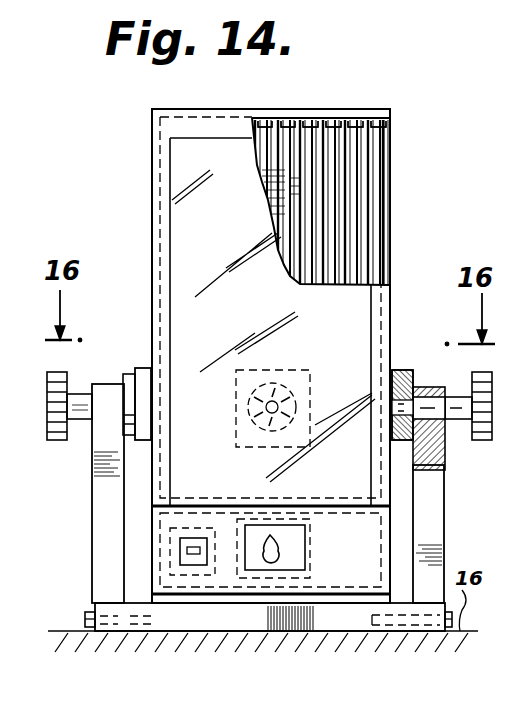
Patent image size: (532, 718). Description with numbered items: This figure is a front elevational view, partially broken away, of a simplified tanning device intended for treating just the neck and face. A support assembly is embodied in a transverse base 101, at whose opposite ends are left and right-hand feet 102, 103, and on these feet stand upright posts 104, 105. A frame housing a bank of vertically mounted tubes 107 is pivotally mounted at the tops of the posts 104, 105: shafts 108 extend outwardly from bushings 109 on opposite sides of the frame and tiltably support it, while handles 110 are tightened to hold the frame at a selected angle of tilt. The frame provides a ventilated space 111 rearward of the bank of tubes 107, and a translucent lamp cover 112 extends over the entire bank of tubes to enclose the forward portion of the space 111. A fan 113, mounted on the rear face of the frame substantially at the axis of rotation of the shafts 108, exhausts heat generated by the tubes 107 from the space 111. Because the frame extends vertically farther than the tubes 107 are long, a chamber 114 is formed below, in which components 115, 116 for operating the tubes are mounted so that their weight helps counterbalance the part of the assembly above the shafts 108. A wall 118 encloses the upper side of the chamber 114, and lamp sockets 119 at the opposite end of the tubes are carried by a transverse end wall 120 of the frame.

The transverse base 101 is at (336, 620).
The left-hand foot 102 is at (105, 631).
The right-hand foot 103 is at (430, 633).
The upright post 104 is at (105, 528).
The upright post 105 is at (440, 517).
The vertically mounted tubes 107 is at (338, 192).
The shaft 108 is at (424, 395).
The bushing 109 is at (145, 387).
The handle 110 is at (63, 378).
The ventilated space 111 is at (384, 226).
The translucent lamp cover 112 is at (200, 163).
The fan 113 is at (298, 372).
The chamber 114 is at (375, 555).
The component 115 is at (193, 575).
The component 116 is at (262, 633).
The wall 118 is at (205, 496).
The lamp socket 119 is at (355, 118).
The transverse end wall 120 is at (181, 108).